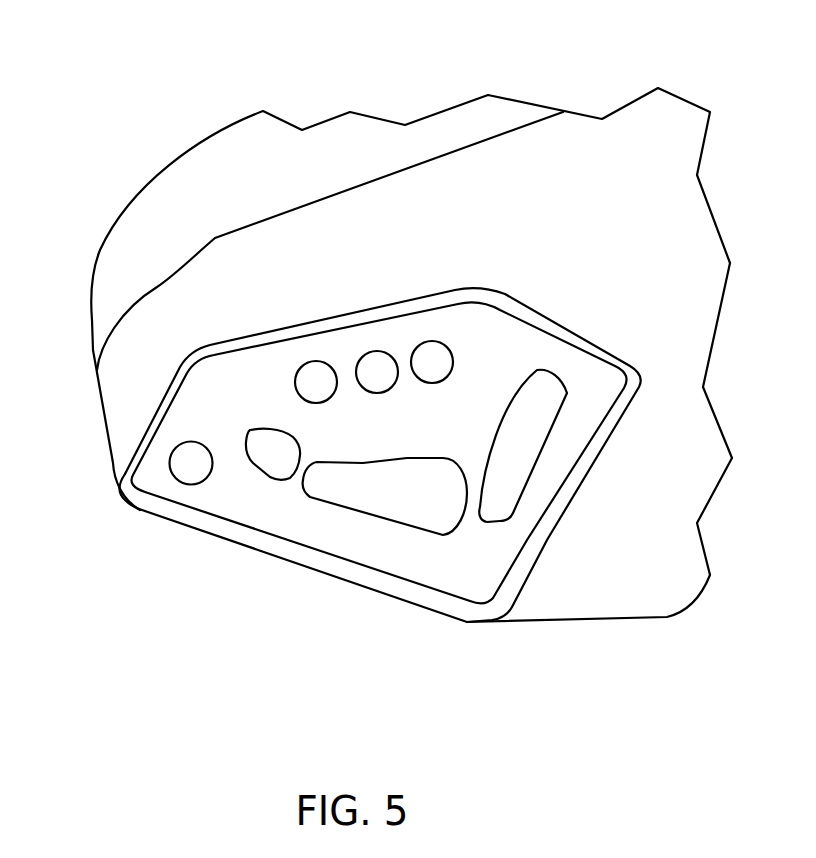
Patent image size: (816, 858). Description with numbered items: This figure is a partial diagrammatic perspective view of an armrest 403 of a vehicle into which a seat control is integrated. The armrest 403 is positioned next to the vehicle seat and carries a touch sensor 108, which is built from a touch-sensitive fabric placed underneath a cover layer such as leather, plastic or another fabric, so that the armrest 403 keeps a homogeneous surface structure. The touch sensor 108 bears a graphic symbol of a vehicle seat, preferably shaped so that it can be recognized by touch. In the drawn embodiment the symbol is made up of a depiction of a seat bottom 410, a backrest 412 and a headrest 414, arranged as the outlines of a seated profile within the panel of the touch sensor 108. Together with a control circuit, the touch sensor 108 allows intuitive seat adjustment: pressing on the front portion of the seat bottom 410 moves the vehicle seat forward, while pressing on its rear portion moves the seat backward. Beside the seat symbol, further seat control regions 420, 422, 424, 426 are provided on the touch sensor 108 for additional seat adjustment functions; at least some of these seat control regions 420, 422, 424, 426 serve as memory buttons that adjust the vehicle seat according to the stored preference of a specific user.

The armrest 403 is at (178, 302).
The touch sensor 108 is at (352, 537).
The seat bottom 410 is at (503, 493).
The backrest 412 is at (423, 512).
The headrest 414 is at (272, 458).
The seat control region 420 is at (185, 467).
The seat control region 422 is at (316, 382).
The seat control region 424 is at (377, 372).
The seat control region 426 is at (432, 362).